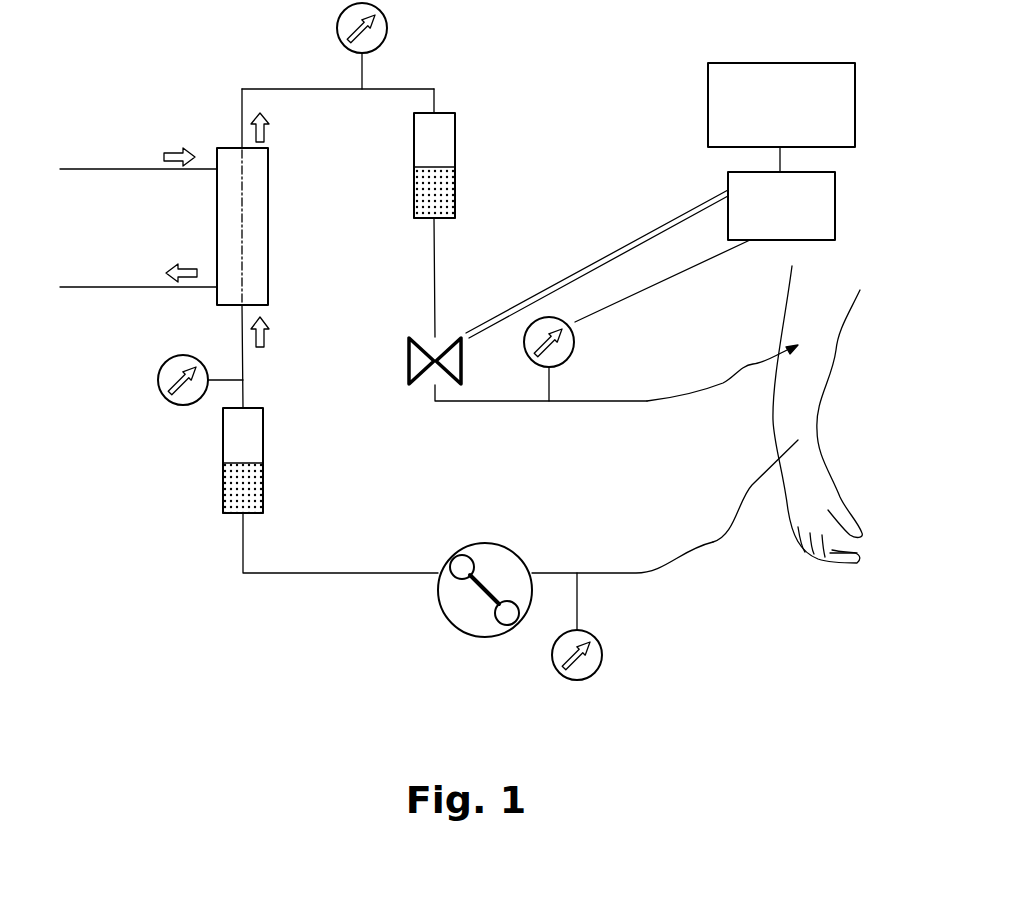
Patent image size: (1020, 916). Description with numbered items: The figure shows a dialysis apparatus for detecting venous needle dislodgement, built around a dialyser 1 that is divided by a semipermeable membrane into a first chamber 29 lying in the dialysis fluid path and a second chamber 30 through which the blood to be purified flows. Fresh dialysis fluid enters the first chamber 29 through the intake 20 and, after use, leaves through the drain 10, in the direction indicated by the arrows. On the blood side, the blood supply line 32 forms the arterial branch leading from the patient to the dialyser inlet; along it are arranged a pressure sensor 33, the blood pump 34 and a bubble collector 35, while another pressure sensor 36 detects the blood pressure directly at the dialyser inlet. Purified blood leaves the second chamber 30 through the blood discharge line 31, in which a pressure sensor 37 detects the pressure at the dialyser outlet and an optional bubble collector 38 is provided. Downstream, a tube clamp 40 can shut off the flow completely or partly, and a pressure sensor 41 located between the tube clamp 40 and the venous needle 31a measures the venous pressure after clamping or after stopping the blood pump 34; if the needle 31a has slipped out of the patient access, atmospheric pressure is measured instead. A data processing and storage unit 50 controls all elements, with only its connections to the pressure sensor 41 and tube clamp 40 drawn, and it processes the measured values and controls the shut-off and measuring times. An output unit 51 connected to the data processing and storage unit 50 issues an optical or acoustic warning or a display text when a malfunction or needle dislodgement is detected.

The dialyser 1 is at (280, 204).
The drain 10 is at (90, 287).
The intake 20 is at (84, 169).
The first chamber 29 is at (228, 148).
The second chamber 30 is at (268, 290).
The blood discharge line 31 is at (723, 383).
The venous needle 31a is at (796, 345).
The blood supply line 32 is at (713, 542).
The pressure sensor 33 is at (603, 655).
The blood pump 34 is at (460, 636).
The bubble collector 35 is at (263, 453).
The pressure sensor 36 is at (170, 403).
The pressure sensor 37 is at (390, 28).
The bubble collector 38 is at (455, 145).
The tube clamp 40 is at (417, 362).
The pressure sensor 41 is at (562, 363).
The data processing and storage unit 50 is at (764, 222).
The output unit 51 is at (764, 120).